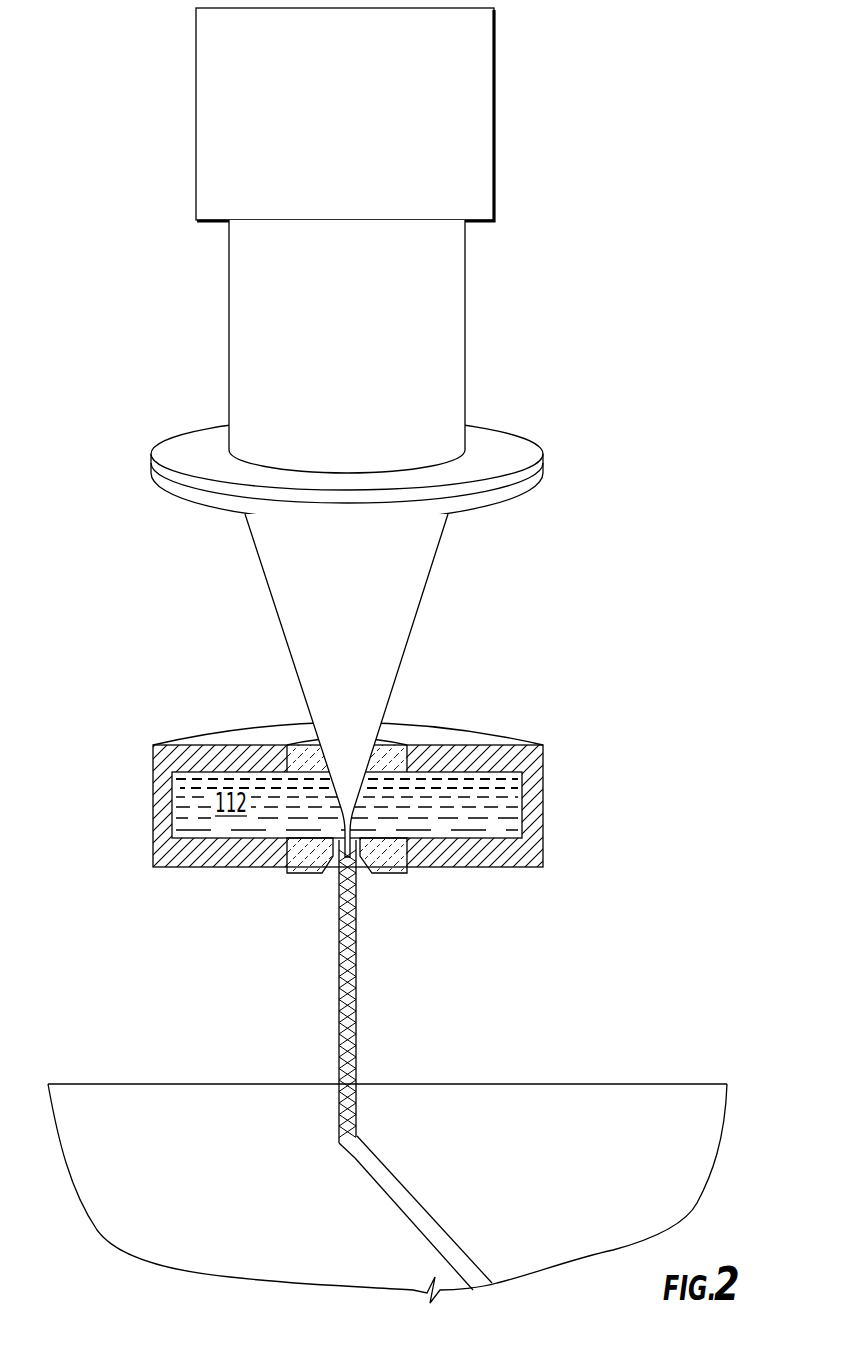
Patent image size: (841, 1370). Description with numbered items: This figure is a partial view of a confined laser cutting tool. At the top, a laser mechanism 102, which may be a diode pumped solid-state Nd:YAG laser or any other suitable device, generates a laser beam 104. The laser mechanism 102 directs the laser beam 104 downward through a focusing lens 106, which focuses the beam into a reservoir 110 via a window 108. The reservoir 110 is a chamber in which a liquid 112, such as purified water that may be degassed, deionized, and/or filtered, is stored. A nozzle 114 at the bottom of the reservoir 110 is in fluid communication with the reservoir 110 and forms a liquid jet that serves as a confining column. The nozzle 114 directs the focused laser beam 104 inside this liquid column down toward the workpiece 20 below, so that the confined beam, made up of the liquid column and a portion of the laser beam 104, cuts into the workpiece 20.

The workpiece 20 is at (243, 1146).
The laser mechanism 102 is at (362, 123).
The laser beam 104 is at (466, 350).
The focusing lens 106 is at (548, 460).
The window 108 is at (298, 742).
The reservoir 110 is at (478, 807).
The liquid 112 is at (247, 816).
The nozzle 114 is at (416, 900).